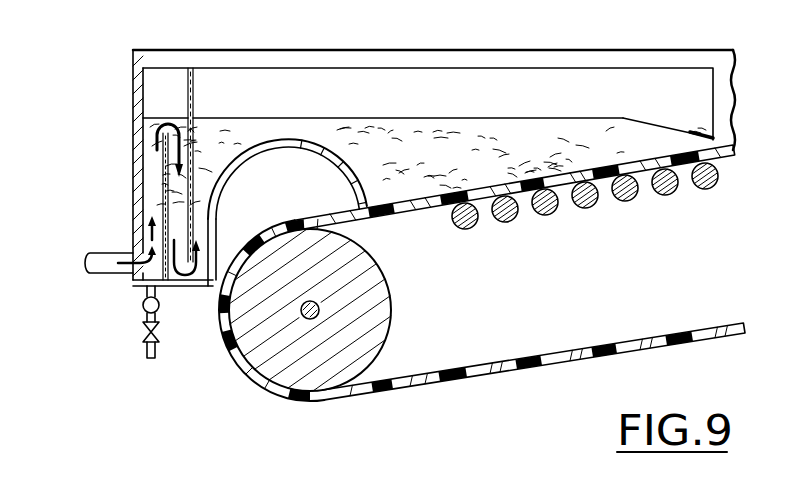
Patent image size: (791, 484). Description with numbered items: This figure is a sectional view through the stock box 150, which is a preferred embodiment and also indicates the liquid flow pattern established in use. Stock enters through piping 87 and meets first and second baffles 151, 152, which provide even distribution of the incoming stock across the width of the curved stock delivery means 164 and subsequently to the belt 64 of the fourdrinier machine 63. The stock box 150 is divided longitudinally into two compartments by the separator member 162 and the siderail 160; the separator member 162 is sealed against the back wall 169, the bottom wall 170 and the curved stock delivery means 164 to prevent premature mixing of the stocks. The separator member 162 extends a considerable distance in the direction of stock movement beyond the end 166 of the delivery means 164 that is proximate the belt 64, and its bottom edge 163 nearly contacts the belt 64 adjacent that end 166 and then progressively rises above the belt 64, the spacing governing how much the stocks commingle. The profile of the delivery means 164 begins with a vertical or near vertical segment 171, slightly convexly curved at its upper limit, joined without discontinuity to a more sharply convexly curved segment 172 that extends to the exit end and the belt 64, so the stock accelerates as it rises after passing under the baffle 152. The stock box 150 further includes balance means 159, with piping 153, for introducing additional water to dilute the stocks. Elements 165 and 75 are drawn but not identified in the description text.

The stock box 150 is at (97, 65).
The siderail 160 is at (466, 52).
The separator member 162 is at (543, 69).
The curved stock delivery means 164 is at (278, 140).
The inclined lip plate 165 is at (667, 132).
The end of stock delivery means 166 is at (362, 200).
The vertical segment 171 is at (206, 196).
The convexly curved segment 172 is at (266, 140).
The second baffle 152 is at (160, 183).
The first baffle 151 is at (166, 192).
The back wall 169 is at (133, 223).
The piping 87 is at (88, 262).
The piping 153 is at (146, 292).
The balance means 159 is at (115, 326).
The bottom wall 170 is at (186, 283).
The fourdrinier machine 63 is at (229, 371).
The belt 64 is at (594, 348).
The support rollers 75 is at (516, 219).
The bottom edge of separator member 163 is at (633, 153).